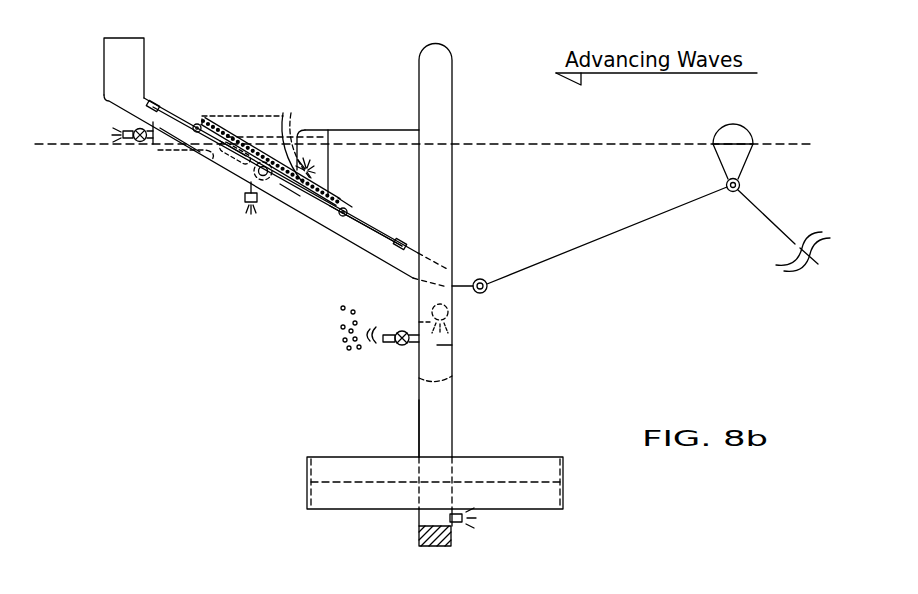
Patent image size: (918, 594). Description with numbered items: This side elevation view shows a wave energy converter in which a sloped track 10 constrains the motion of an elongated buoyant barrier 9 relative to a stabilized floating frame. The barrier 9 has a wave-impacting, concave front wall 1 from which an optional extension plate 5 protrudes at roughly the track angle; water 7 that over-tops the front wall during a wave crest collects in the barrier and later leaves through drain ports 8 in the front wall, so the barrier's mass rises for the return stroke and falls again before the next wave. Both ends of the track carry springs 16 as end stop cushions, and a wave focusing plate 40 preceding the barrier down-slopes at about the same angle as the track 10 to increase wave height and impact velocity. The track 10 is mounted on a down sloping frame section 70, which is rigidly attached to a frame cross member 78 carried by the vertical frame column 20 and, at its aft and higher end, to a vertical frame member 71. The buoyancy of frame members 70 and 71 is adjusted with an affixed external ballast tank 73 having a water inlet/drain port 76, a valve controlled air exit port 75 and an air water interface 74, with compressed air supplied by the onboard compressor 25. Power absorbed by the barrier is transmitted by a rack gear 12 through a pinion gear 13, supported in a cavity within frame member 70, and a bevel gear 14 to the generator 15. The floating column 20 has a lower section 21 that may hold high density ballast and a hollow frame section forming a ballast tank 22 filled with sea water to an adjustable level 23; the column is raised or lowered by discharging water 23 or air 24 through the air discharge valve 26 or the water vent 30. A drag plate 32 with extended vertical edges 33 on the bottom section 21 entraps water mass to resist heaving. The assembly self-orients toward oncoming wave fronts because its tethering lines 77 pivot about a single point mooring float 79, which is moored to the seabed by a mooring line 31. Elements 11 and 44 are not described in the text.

The front wall 1 is at (283, 132).
The extension plate 5 is at (347, 191).
The water 7 is at (252, 134).
The drain ports 8 is at (304, 158).
The elongated buoyant barrier 9 is at (228, 124).
The sloped track 10 is at (167, 112).
The roller 11 is at (197, 123).
The rack gear 12 is at (289, 205).
The pinion gear 13 is at (271, 185).
The bevel gear 14 is at (248, 178).
The generator 15 is at (234, 160).
The springs 16 is at (151, 100).
The vertical frame column 20 is at (452, 178).
The lower section 21 is at (417, 537).
The ballast tank 22 is at (430, 432).
The water ballast level 23 is at (445, 379).
The air 24 is at (452, 346).
The air compressor 25 is at (448, 304).
The air discharge valve 26 is at (400, 329).
The water vent 30 is at (456, 523).
The mooring line 31 is at (767, 222).
The drag plate 32 is at (516, 481).
The vertical edges 33 is at (306, 468).
The wave focusing plate 40 is at (391, 234).
The support bracket 44 is at (362, 130).
The down sloping frame section 70 is at (111, 101).
The vertical frame member 71 is at (104, 58).
The external ballast tank 73 is at (193, 153).
The air water interface 74 is at (172, 148).
The air exit port 75 is at (150, 122).
The water inlet/drain port 76 is at (246, 205).
The tethering lines 77 is at (600, 238).
The frame cross member 78 is at (67, 147).
The single point mooring float 79 is at (735, 130).